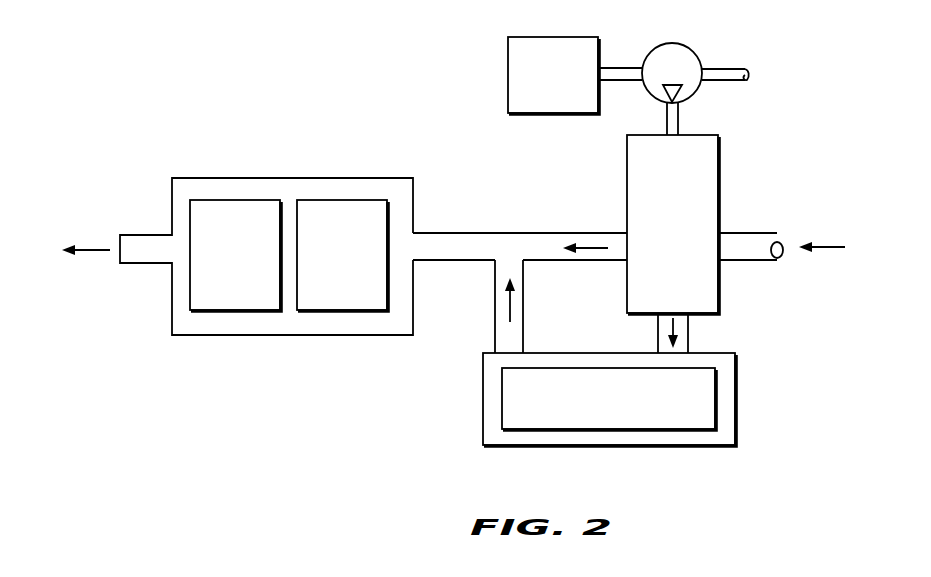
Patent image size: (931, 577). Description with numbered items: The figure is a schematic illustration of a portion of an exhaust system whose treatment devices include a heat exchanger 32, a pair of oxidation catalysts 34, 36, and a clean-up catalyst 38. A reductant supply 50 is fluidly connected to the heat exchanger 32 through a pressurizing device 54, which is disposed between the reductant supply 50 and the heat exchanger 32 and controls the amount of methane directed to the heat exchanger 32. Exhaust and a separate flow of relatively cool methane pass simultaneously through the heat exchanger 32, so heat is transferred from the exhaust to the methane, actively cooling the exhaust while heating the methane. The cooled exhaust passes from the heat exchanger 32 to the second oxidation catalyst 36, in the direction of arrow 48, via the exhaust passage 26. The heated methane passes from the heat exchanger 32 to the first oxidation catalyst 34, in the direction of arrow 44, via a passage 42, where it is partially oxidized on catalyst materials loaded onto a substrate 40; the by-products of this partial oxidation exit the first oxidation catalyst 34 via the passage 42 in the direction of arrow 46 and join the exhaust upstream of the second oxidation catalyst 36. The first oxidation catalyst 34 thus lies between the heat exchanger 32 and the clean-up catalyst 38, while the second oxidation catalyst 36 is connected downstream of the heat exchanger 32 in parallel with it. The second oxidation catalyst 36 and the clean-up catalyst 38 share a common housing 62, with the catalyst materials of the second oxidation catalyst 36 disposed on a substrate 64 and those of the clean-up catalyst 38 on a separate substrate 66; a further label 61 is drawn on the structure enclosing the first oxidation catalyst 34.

The exhaust passage 26 is at (552, 233).
The heat exchanger 32 is at (721, 290).
The first oxidation catalyst 34 is at (589, 409).
The second oxidation catalyst 36 is at (326, 266).
The clean-up catalyst 38 is at (221, 266).
The substrate 40 is at (645, 399).
The passage 42 is at (525, 313).
The arrow 44 is at (660, 325).
The arrow 46 is at (506, 297).
The arrow 48 is at (587, 248).
The reductant supply 50 is at (508, 53).
The pressurizing device 54 is at (693, 52).
The housing 61 is at (645, 399).
The housing 62 is at (237, 216).
The substrate 64 is at (342, 216).
The substrate 66 is at (235, 216).